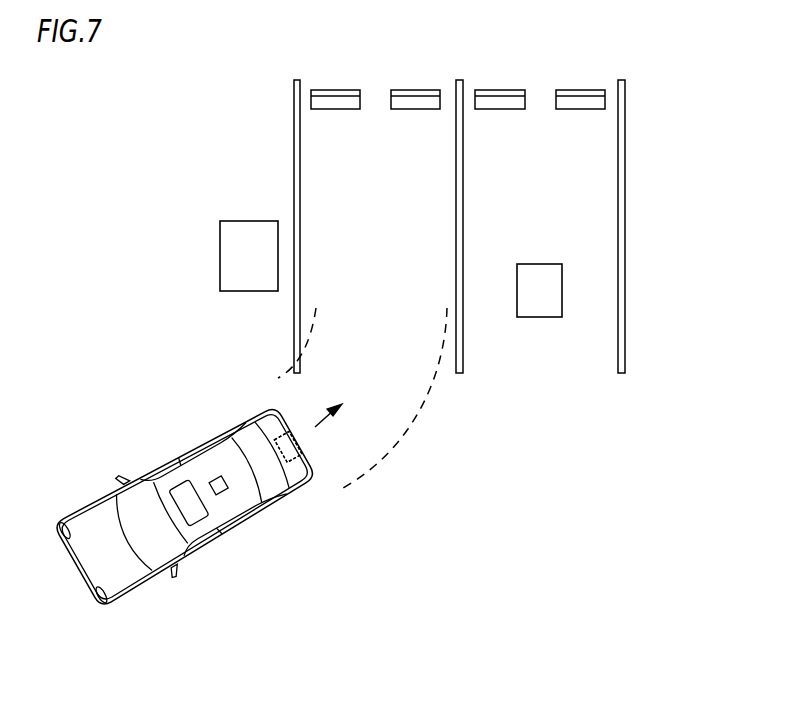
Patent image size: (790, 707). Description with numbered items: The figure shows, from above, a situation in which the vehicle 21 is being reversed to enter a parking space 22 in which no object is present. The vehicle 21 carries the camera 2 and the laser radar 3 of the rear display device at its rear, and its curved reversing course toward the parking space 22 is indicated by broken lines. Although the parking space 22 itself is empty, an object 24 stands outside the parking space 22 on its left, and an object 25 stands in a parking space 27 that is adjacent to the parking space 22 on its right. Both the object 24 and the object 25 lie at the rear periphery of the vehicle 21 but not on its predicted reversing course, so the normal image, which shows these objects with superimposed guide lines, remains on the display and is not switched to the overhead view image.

The vehicle 21 is at (102, 497).
The parking space 22 is at (312, 133).
The parking space 27 is at (612, 124).
The object 24 is at (220, 257).
The object 25 is at (562, 282).
The camera 2 is at (285, 435).
The laser radar 3 is at (300, 460).